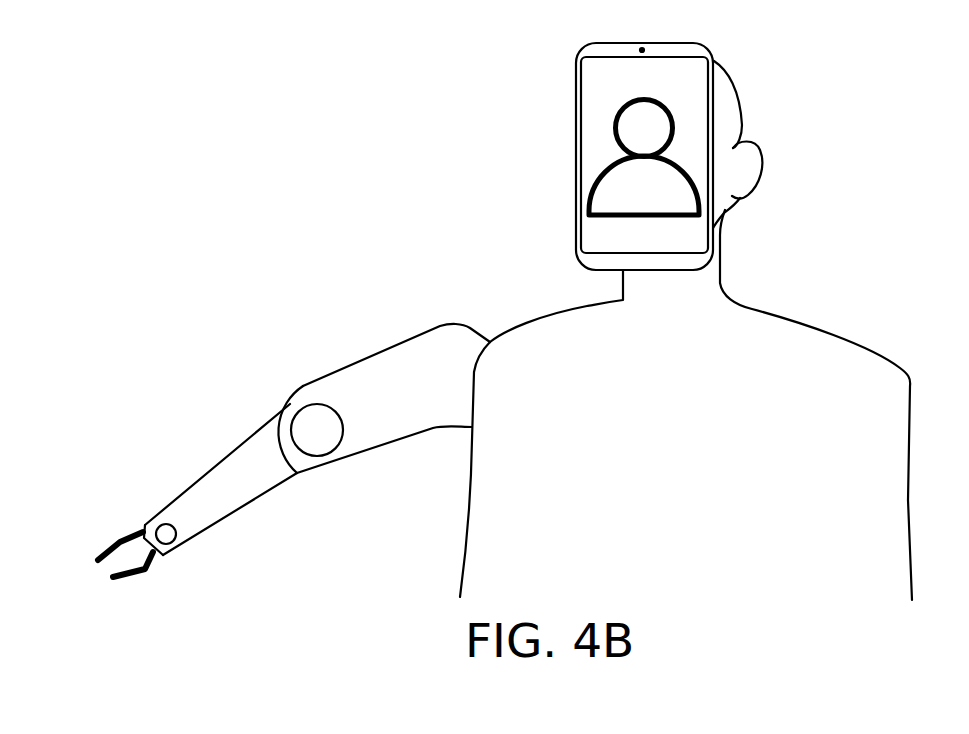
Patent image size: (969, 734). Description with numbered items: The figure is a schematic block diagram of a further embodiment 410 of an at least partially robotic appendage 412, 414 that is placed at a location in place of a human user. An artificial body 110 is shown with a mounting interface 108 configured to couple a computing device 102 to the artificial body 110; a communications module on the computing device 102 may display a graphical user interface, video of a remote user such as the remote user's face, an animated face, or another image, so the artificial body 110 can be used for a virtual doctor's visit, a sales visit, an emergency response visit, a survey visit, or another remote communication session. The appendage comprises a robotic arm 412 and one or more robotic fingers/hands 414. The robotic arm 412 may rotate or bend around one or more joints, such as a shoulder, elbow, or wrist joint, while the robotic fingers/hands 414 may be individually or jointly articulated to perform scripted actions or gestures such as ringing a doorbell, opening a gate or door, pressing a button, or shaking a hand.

The further embodiment of an at least partially robotic appendage 410 is at (126, 48).
The computing device 102 is at (576, 96).
The mounting interface 108 is at (576, 172).
The artificial body 110 is at (733, 78).
The robotic arm 412 is at (370, 362).
The robotic fingers/hands 414 is at (100, 546).